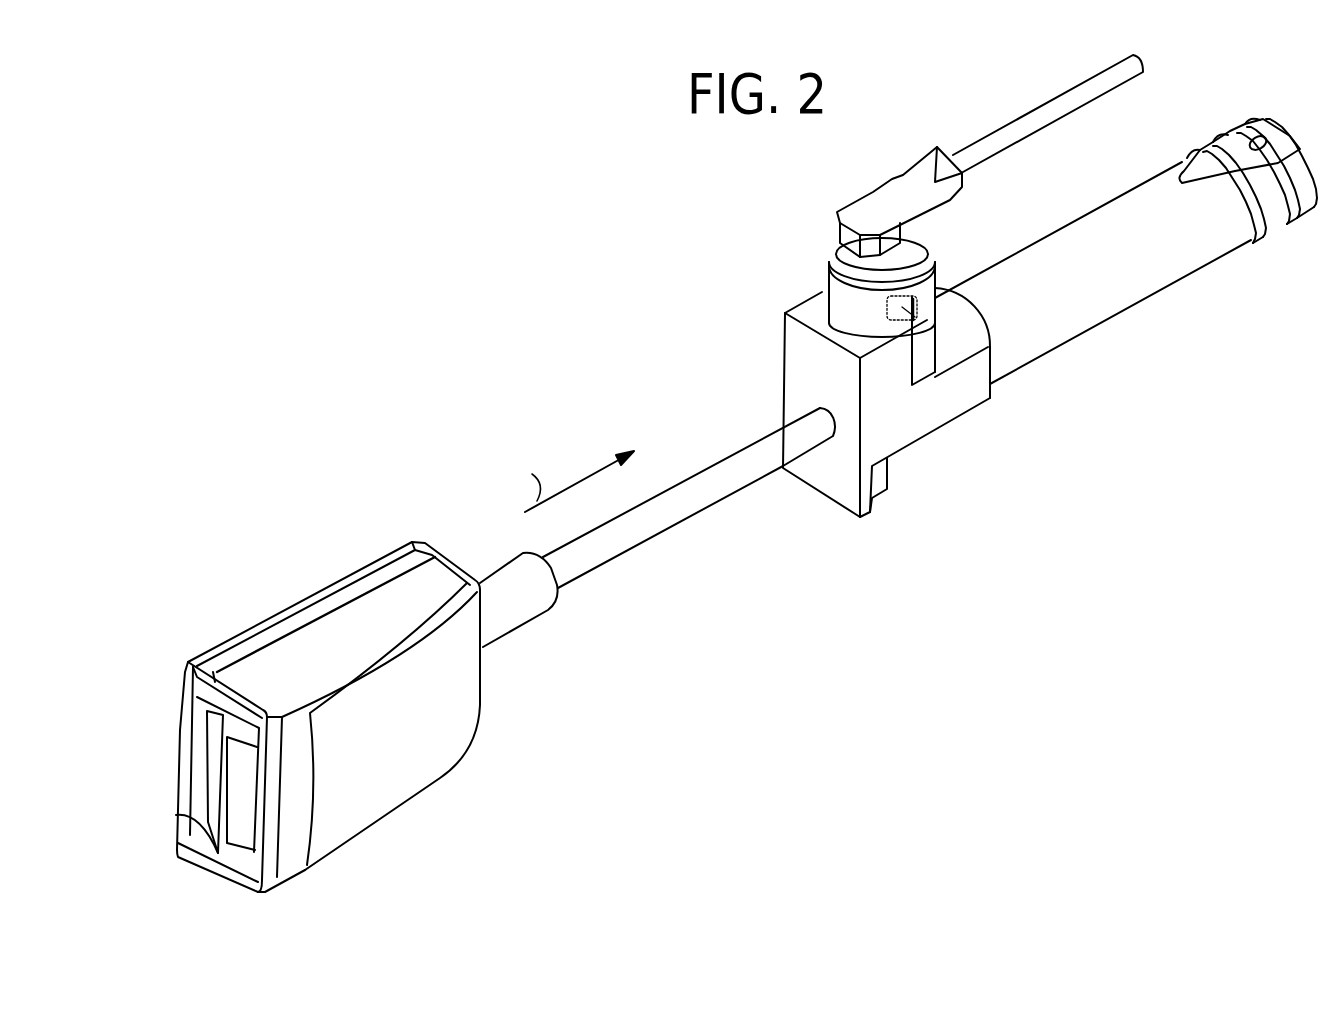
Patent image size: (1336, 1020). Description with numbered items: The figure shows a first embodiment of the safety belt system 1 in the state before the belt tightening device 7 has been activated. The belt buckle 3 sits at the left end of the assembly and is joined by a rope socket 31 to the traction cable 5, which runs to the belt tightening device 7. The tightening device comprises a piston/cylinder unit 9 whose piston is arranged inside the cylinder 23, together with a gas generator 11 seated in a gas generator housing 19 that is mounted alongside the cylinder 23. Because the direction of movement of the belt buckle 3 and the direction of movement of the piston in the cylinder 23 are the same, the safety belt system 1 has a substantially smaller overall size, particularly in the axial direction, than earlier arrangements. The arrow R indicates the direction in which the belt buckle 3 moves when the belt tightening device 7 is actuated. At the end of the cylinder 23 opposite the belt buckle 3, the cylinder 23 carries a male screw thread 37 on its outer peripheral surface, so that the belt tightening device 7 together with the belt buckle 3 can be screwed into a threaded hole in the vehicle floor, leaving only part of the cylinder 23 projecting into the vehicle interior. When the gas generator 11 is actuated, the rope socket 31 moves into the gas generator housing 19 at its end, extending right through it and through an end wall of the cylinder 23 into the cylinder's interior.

The safety belt system 1 is at (743, 630).
The belt buckle 3 is at (401, 771).
The traction cable 5 is at (706, 485).
The belt tightening device 7 is at (778, 261).
The piston/cylinder unit 9 is at (1099, 332).
The gas generator 11 is at (917, 320).
The gas generator housing 19 is at (972, 383).
The cylinder 23 is at (1157, 260).
The rope socket 31 is at (527, 600).
The male screw thread 37 is at (1248, 227).